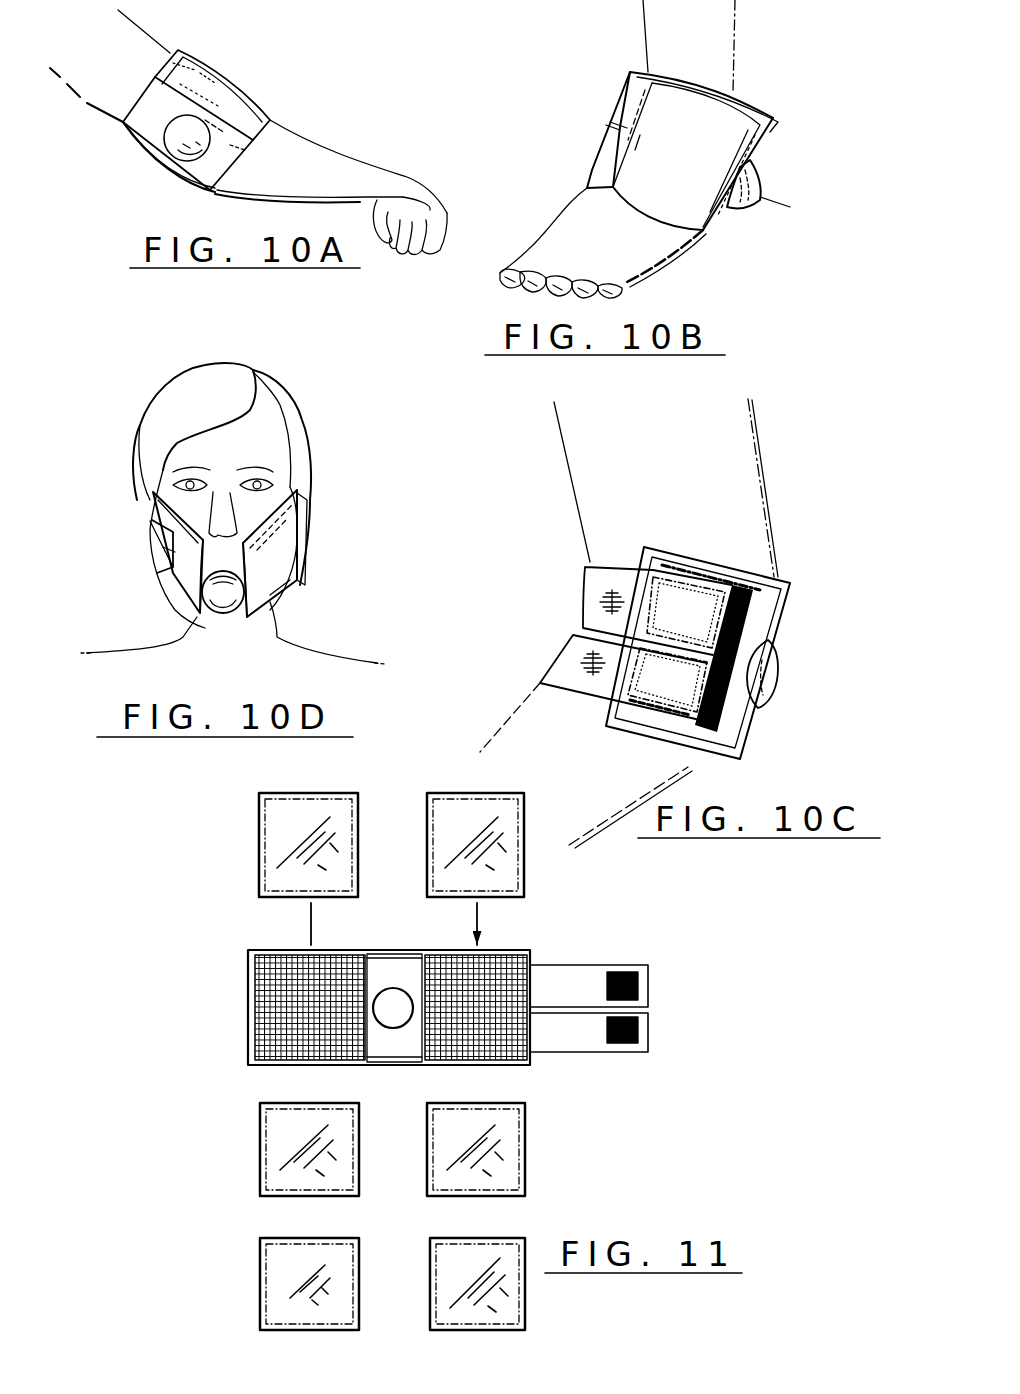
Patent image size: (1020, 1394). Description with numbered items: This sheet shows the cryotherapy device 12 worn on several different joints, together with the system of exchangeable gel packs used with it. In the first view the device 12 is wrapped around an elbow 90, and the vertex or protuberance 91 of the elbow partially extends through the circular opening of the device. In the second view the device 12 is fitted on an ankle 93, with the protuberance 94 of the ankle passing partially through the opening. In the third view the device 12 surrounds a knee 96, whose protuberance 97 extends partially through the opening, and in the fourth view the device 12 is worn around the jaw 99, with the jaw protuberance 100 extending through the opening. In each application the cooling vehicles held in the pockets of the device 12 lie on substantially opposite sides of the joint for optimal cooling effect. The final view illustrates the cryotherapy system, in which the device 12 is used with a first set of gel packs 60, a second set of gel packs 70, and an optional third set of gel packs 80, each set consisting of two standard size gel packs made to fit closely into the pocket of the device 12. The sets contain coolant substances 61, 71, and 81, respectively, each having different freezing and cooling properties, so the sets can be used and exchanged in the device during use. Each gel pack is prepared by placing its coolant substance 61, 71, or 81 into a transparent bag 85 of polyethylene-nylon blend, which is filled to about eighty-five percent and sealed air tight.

In FIG. 10A, the device 12 is at (253, 75).
In FIG. 10B, the device 12 is at (590, 125).
In FIG. 10D, the device 12 is at (140, 525).
In FIG. 10C, the device 12 is at (790, 605).
In FIG. 11, the device 12 is at (230, 957).
In FIG. 10A, the elbow 90 is at (155, 173).
In FIG. 10A, the protuberance of elbow 91 is at (185, 152).
In FIG. 10B, the ankle 93 is at (767, 167).
In FIG. 10B, the protuberance of ankle 94 is at (758, 200).
In FIG. 10D, the knee 96 is at (297, 587).
In FIG. 10D, the protuberance of knee 97 is at (222, 598).
In FIG. 10C, the jaw 99 is at (789, 661).
In FIG. 10C, the protuberance of jaw 100 is at (763, 681).
In FIG. 11, the first set of gel packs 60 is at (483, 793).
In FIG. 11, the coolant substance of first gel packs 61 is at (440, 875).
In FIG. 11, the second set of gel packs 70 is at (478, 1103).
In FIG. 11, the coolant substance of second gel packs 71 is at (440, 1150).
In FIG. 11, the third set of gel packs 80 is at (482, 1238).
In FIG. 11, the coolant substance of third gel packs 81 is at (440, 1283).
In FIG. 11, the transparent bag 85 is at (260, 842).